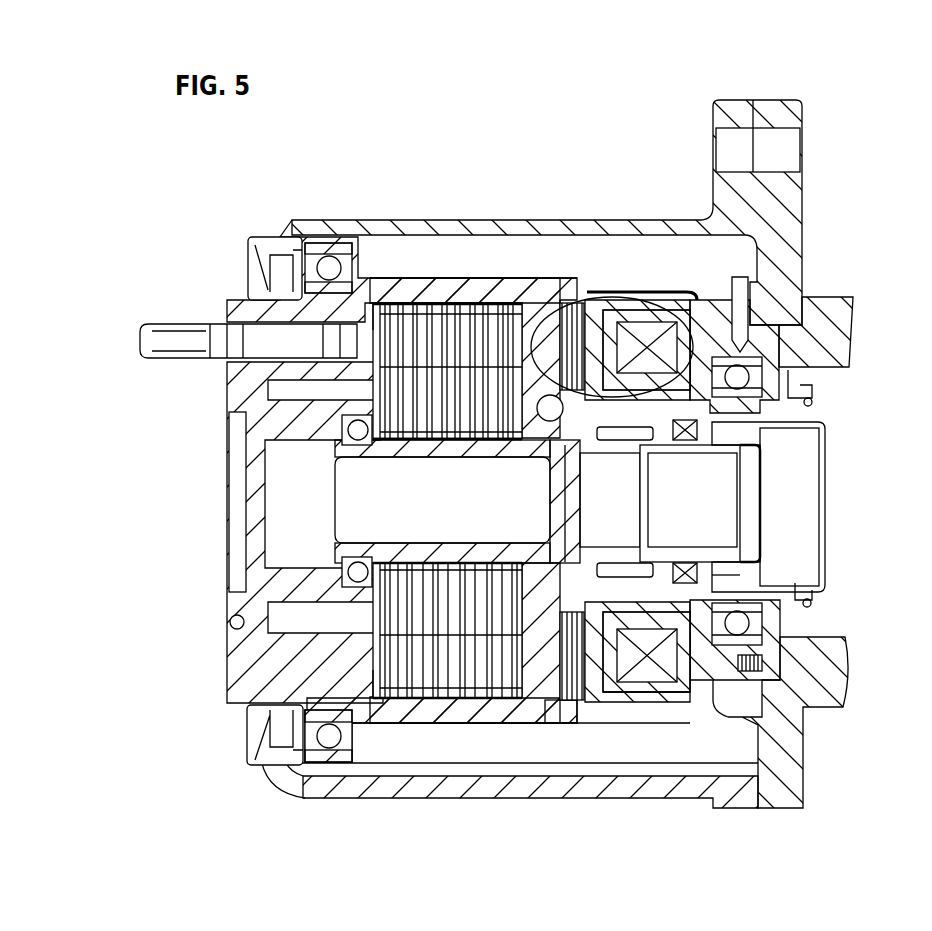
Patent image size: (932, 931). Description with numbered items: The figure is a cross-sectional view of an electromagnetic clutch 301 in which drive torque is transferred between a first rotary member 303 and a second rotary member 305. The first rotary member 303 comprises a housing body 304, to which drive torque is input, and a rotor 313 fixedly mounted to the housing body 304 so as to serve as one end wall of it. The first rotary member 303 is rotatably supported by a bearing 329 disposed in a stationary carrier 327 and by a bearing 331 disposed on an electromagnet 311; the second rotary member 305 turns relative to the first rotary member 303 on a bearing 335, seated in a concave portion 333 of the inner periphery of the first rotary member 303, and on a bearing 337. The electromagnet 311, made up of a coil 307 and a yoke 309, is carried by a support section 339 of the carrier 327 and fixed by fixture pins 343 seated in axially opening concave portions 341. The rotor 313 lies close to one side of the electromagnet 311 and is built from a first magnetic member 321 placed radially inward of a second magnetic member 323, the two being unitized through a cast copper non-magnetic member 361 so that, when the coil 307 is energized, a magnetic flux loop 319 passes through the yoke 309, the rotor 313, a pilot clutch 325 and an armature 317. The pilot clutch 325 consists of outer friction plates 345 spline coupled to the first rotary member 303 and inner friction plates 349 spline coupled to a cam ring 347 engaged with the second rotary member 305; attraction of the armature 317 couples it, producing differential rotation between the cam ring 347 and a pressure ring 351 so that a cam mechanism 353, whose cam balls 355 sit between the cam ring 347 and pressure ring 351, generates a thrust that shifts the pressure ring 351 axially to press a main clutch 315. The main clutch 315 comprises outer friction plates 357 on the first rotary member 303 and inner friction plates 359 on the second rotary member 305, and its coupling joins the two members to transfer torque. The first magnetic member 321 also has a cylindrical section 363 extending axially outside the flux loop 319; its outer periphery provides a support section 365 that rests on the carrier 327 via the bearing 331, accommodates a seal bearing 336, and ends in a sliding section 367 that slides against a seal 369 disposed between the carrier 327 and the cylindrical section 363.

The electromagnetic clutch 301 is at (612, 192).
The first rotary member 303 is at (500, 278).
The housing body 304 is at (458, 292).
The second rotary member 305 is at (328, 452).
The coil 307 is at (663, 693).
The yoke 309 is at (633, 627).
The electromagnet 311 is at (693, 727).
The rotor 313 is at (612, 291).
The main clutch 315 is at (420, 705).
The armature 317 is at (500, 710).
The magnetic flux loop 319 is at (650, 300).
The first magnetic member 321 is at (643, 413).
The second magnetic member 323 is at (590, 298).
The pilot clutch 325 is at (573, 706).
The carrier 327 is at (790, 226).
The bearing 329 is at (343, 250).
The bearing 331 is at (838, 358).
The concave portion 333 is at (643, 563).
The bearing 335 is at (630, 440).
The seal bearing 336 is at (757, 485).
The bearing 337 is at (368, 550).
The support section 339 is at (803, 738).
The concave portions 341 is at (765, 290).
The fixture pins 343 is at (745, 320).
The outer friction plates 345 is at (557, 707).
The cam ring 347 is at (567, 570).
The inner friction plates 349 is at (535, 587).
The pressure ring 351 is at (472, 440).
The cam mechanism 353 is at (552, 451).
The cam balls 355 is at (540, 420).
The outer friction plates 357 is at (388, 300).
The inner friction plates 359 is at (400, 432).
The non-magnetic member 361 is at (590, 667).
The cylindrical section 363 is at (750, 590).
The support section 365 is at (767, 425).
The sliding section 367 is at (793, 578).
The seal 369 is at (805, 378).